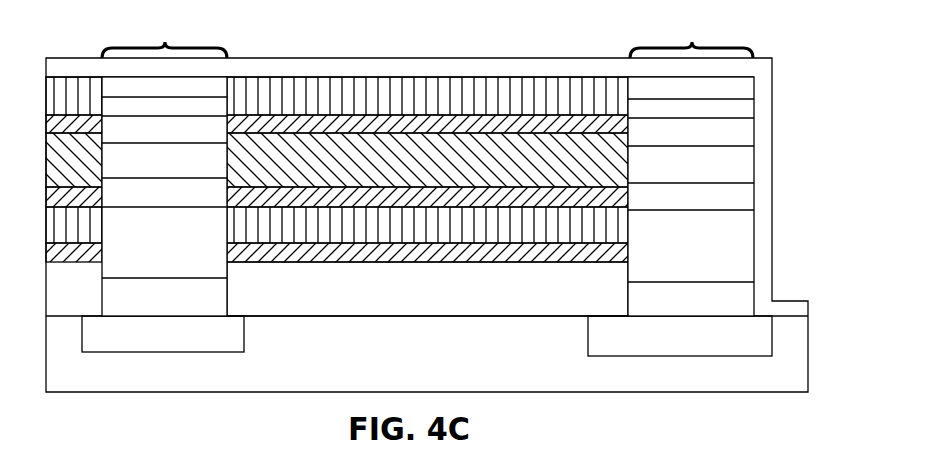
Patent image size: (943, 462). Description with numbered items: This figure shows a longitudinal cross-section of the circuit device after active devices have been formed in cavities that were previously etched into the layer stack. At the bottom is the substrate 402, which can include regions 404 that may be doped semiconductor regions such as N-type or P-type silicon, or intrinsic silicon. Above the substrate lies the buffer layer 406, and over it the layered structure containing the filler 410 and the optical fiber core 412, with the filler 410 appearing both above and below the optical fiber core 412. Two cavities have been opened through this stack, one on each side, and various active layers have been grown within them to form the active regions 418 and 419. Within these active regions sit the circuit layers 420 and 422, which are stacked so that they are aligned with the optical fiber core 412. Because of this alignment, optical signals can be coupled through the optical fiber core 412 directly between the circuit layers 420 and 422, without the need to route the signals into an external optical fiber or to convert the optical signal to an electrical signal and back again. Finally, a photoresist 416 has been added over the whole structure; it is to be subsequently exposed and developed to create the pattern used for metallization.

The substrate 402 is at (427, 339).
The regions 404 is at (427, 336).
The buffer layer 406 is at (427, 289).
The filler 410 is at (337, 160).
The optical fiber core 412 is at (337, 160).
The photoresist 416 is at (777, 100).
The active region 418 is at (164, 30).
The active region 419 is at (691, 30).
The circuit layer 420 is at (164, 196).
The circuit layer 422 is at (691, 196).